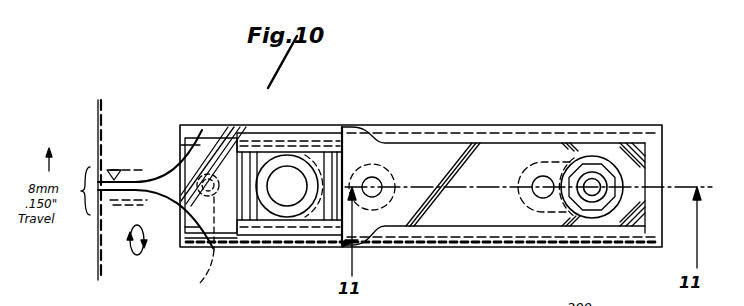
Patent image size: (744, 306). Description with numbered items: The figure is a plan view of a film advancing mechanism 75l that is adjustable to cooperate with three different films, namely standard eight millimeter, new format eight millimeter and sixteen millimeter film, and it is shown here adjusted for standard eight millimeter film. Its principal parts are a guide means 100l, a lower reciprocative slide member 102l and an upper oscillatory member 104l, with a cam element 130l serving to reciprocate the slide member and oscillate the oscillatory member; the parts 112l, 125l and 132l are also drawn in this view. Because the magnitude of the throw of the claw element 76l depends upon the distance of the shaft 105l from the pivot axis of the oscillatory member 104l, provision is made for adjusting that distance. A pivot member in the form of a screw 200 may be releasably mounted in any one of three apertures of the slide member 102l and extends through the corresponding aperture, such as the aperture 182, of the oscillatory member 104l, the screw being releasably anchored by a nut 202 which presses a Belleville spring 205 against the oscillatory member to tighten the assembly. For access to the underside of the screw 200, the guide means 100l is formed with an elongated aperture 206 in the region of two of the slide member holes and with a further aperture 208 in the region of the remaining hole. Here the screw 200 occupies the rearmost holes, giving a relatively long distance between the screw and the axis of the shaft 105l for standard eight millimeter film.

The claw element 76l is at (114, 170).
The guide means 100l is at (620, 255).
The film advancing mechanism 75l is at (405, 120).
The base plate 112l is at (523, 250).
The lower reciprocative slide member 102l is at (195, 227).
The upper oscillatory member 104l is at (221, 127).
The pivot path 125l is at (188, 276).
The bearing block frame 132l is at (305, 160).
The cam element 130l is at (280, 208).
The shaft 105l is at (277, 178).
The aperture 182 is at (371, 198).
The aperture 208 is at (393, 176).
The elongated aperture 206 is at (519, 180).
The screw 200 is at (618, 169).
The Belleville spring 205 is at (575, 163).
The nut 202 is at (592, 182).